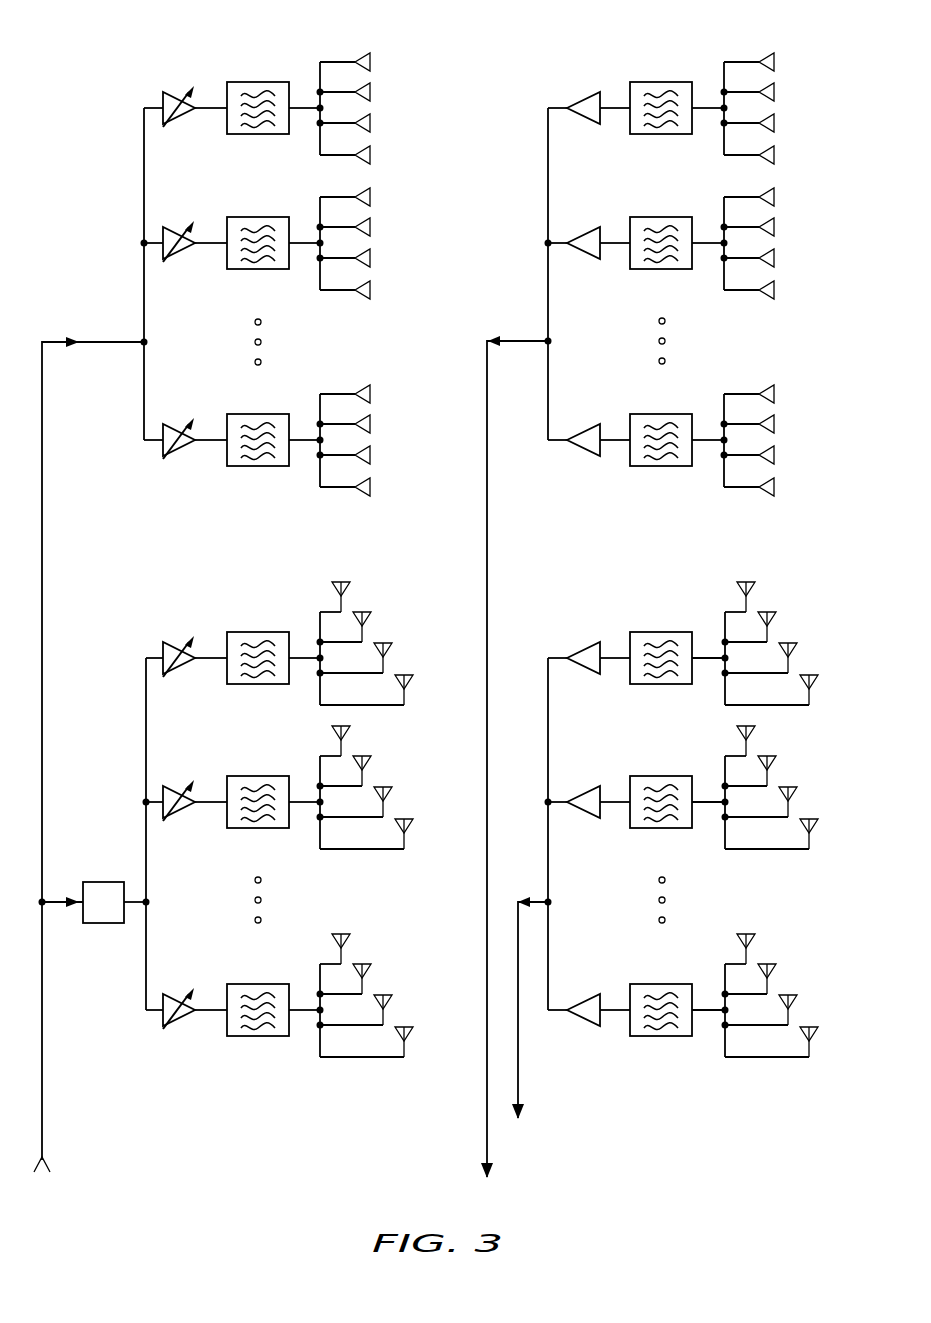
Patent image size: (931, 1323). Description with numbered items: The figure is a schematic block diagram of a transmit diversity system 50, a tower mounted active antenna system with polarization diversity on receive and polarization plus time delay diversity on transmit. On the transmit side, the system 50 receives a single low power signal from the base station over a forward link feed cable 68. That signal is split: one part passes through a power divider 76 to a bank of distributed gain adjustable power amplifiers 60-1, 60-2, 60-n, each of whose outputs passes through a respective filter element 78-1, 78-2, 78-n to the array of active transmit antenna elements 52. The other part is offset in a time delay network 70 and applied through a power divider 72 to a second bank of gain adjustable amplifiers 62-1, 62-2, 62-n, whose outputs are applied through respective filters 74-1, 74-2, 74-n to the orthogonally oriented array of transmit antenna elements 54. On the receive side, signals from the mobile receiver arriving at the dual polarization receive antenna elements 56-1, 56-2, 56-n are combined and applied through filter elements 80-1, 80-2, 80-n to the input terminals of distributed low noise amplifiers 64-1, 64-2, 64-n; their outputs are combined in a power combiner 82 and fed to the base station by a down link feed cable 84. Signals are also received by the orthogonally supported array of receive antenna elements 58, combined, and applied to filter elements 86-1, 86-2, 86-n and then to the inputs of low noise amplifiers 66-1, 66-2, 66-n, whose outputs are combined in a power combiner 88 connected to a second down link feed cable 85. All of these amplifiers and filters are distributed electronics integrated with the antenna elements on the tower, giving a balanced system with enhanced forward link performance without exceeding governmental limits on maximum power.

The transmit diversity system 50 is at (115, 60).
The transmit antenna elements 52 is at (386, 64).
The transmit antenna elements 54 is at (386, 614).
The receive antenna element 56-1 is at (794, 64).
The receive antenna element 56-2 is at (794, 199).
The receive antenna element 56-n is at (794, 394).
The receive antenna elements 58 is at (794, 614).
The gain adjustable power amplifier 60-1 is at (190, 122).
The gain adjustable power amplifier 60-2 is at (190, 257).
The gain adjustable power amplifier 60-n is at (190, 454).
The gain adjustable power amplifier 62-1 is at (190, 672).
The gain adjustable power amplifier 62-2 is at (190, 816).
The gain adjustable power amplifier 62-n is at (190, 1024).
The low noise amplifier 64-1 is at (577, 92).
The low noise amplifier 64-2 is at (577, 227).
The low noise amplifier 64-n is at (582, 456).
The low noise amplifier 66-1 is at (577, 642).
The low noise amplifier 66-2 is at (577, 777).
The low noise amplifier 66-n is at (582, 1026).
The forward link feed cable 68 is at (42, 566).
The time delay network 70 is at (101, 924).
The power divider 72 is at (148, 905).
The filter 74-1 is at (258, 632).
The filter 74-2 is at (258, 777).
The filter 74-n is at (258, 1037).
The power divider 76 is at (147, 345).
The filter element 78-1 is at (258, 82).
The filter element 78-2 is at (258, 217).
The filter element 78-n is at (258, 466).
The filter element 80-1 is at (660, 82).
The filter element 80-2 is at (660, 217).
The filter element 80-n is at (660, 466).
The power combiner 82 is at (550, 338).
The down link feed cable 84 is at (487, 566).
The down link feed cable 85 is at (518, 1087).
The filter element 86-1 is at (660, 632).
The filter element 86-2 is at (660, 777).
The filter element 86-n is at (660, 1037).
The power combiner 88 is at (551, 905).